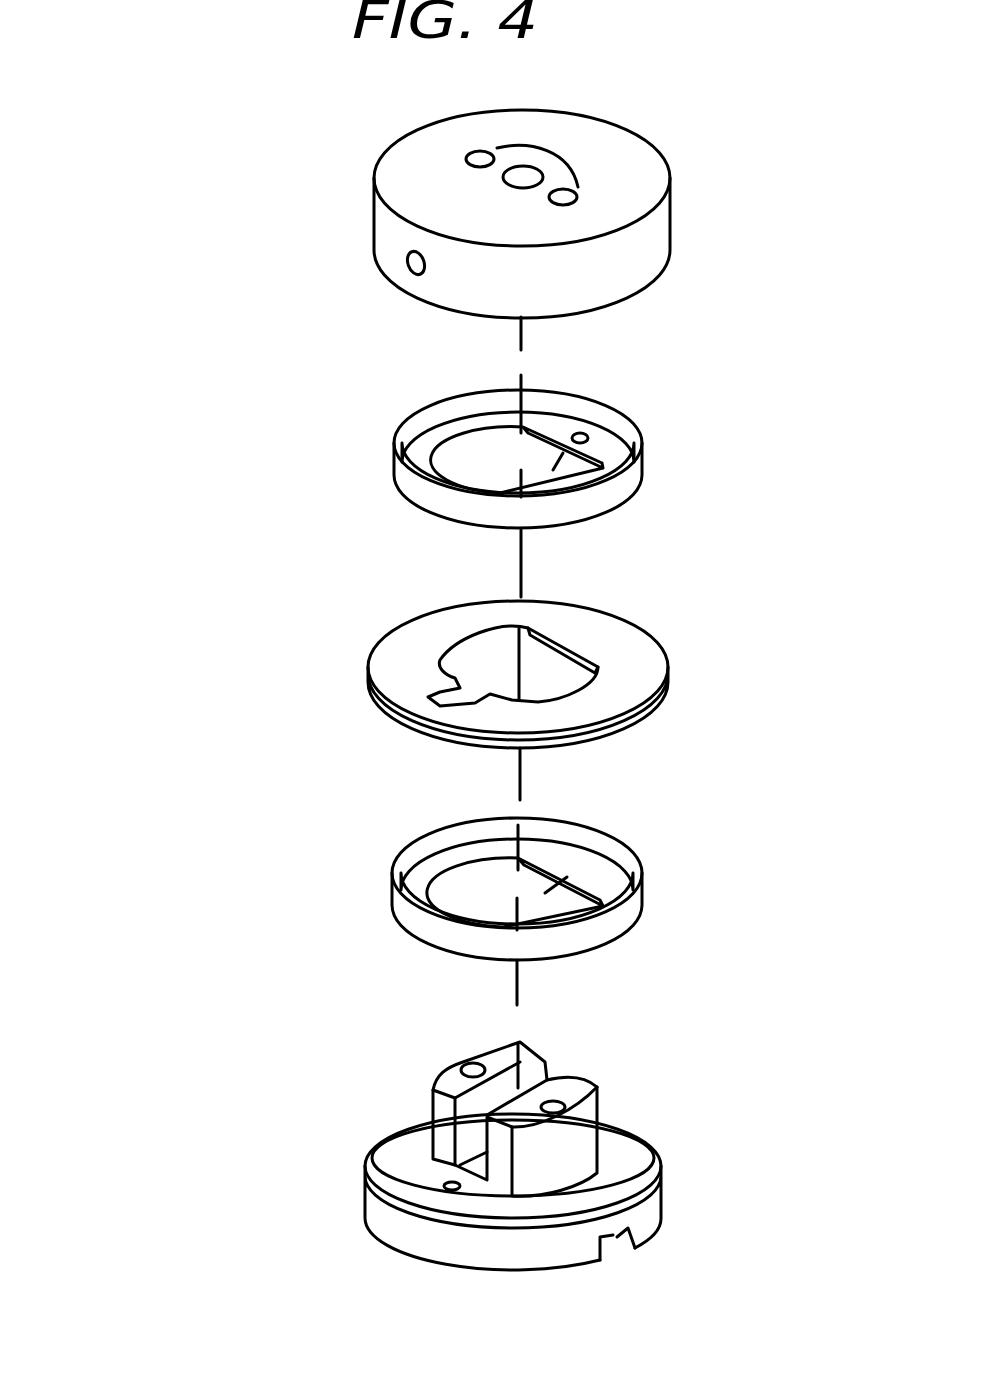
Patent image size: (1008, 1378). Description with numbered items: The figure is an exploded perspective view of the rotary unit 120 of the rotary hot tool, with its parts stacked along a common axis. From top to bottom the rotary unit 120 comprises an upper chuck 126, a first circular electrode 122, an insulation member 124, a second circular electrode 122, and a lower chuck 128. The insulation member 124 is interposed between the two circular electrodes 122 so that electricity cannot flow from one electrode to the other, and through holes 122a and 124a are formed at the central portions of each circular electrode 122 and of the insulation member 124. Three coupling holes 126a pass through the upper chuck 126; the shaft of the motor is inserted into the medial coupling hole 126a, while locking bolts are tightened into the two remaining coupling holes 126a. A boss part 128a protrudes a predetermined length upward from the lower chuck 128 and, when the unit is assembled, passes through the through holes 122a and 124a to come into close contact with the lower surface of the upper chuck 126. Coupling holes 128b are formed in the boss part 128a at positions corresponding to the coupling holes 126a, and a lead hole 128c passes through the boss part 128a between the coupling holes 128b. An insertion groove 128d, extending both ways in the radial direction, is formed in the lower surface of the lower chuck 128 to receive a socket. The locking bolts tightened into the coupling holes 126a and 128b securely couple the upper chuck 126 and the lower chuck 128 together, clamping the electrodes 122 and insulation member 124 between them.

The rotary unit 120 is at (148, 132).
The circular electrode 122 is at (395, 470).
The through hole 122a is at (588, 442).
The insulation member 124 is at (370, 675).
The through hole 124a is at (545, 677).
The upper chuck 126 is at (370, 229).
The coupling hole 126a is at (590, 146).
The lower chuck 128 is at (362, 1207).
The boss part 128a is at (432, 1112).
The coupling hole 128b is at (560, 1102).
The lead hole 128c is at (437, 1070).
The insertion groove 128d is at (613, 1243).